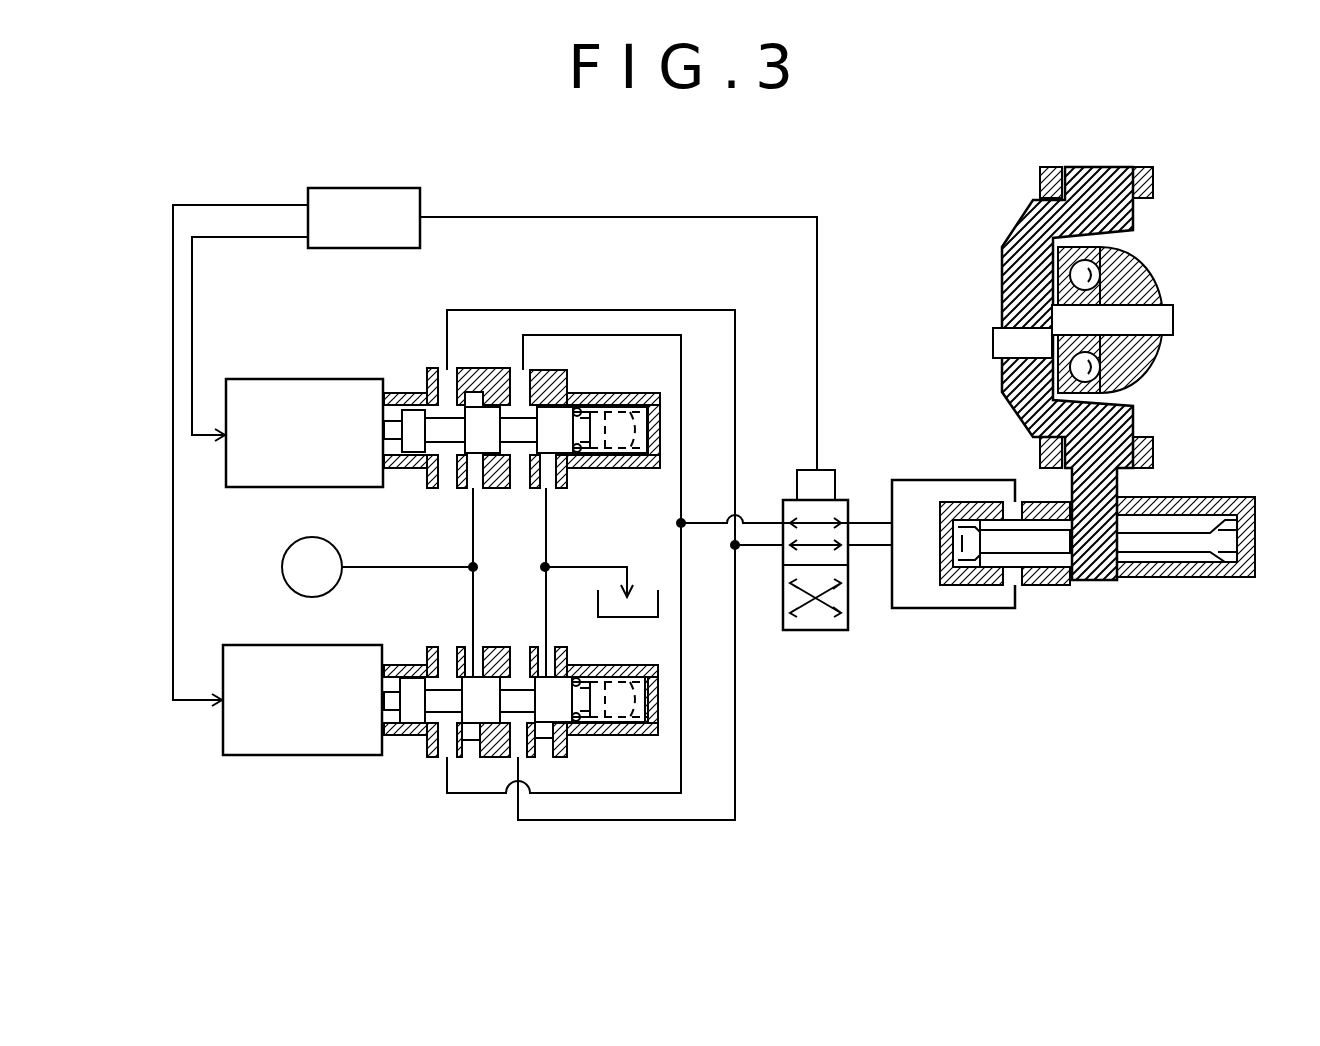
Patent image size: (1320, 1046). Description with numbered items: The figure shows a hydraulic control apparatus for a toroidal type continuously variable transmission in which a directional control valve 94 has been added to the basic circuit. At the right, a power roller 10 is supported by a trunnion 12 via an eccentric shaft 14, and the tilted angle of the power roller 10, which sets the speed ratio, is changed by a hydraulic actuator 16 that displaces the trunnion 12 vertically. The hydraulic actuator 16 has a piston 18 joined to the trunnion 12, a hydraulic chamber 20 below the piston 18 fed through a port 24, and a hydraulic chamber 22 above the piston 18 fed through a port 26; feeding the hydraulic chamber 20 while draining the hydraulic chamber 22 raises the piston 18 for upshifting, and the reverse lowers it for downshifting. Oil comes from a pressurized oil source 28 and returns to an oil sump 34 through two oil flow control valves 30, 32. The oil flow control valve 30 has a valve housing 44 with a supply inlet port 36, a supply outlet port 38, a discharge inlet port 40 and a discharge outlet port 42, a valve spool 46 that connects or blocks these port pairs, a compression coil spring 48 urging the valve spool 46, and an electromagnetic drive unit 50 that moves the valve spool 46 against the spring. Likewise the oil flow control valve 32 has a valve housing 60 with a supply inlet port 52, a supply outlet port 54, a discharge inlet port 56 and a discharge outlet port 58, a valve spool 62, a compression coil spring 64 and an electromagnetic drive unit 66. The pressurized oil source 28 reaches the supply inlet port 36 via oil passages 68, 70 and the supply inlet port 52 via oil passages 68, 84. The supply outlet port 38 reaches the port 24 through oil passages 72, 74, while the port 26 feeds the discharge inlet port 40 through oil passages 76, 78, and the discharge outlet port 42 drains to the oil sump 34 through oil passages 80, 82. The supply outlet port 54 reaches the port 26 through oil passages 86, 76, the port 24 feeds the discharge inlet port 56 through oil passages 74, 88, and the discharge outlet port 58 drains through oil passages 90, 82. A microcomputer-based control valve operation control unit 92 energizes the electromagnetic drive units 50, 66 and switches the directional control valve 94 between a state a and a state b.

The power roller 10 is at (1162, 288).
The trunnion 12 is at (1002, 258).
The eccentric shaft 14 is at (1173, 332).
The hydraulic actuator 16 is at (1185, 486).
The piston 18 is at (1150, 550).
The hydraulic chamber 20 is at (1045, 556).
The hydraulic chamber 22 is at (1040, 502).
The port 24 is at (1030, 588).
The port 26 is at (962, 505).
The pressurized oil source 28 is at (284, 555).
The oil flow control valve 30 is at (399, 339).
The oil flow control valve 32 is at (390, 780).
The oil sump 34 is at (636, 617).
The supply inlet port 36 is at (452, 488).
The supply outlet port 38 is at (436, 366).
The discharge inlet port 40 is at (505, 368).
The discharge outlet port 42 is at (535, 488).
The valve housing 44 is at (567, 462).
The valve spool 46 is at (577, 407).
The compression coil spring 48 is at (620, 455).
The electromagnetic drive unit 50 is at (300, 379).
The supply inlet port 52 is at (458, 647).
The supply outlet port 54 is at (438, 757).
The discharge inlet port 56 is at (505, 757).
The discharge outlet port 58 is at (557, 647).
The valve housing 60 is at (568, 677).
The valve spool 62 is at (580, 722).
The compression coil spring 64 is at (647, 722).
The electromagnetic drive unit 66 is at (283, 755).
The oil passage 68 is at (398, 567).
The oil passage 70 is at (473, 548).
The oil passage 72 is at (622, 310).
The oil passage 74 is at (925, 608).
The oil passage 76 is at (905, 480).
The oil passage 78 is at (625, 336).
The oil passage 80 is at (547, 548).
The oil passage 82 is at (628, 567).
The oil passage 84 is at (475, 596).
The oil passage 86 is at (548, 738).
The oil passage 88 is at (688, 820).
The oil passage 90 is at (545, 598).
The control valve operation control unit 92 is at (432, 196).
The directional control valve 94 is at (783, 502).